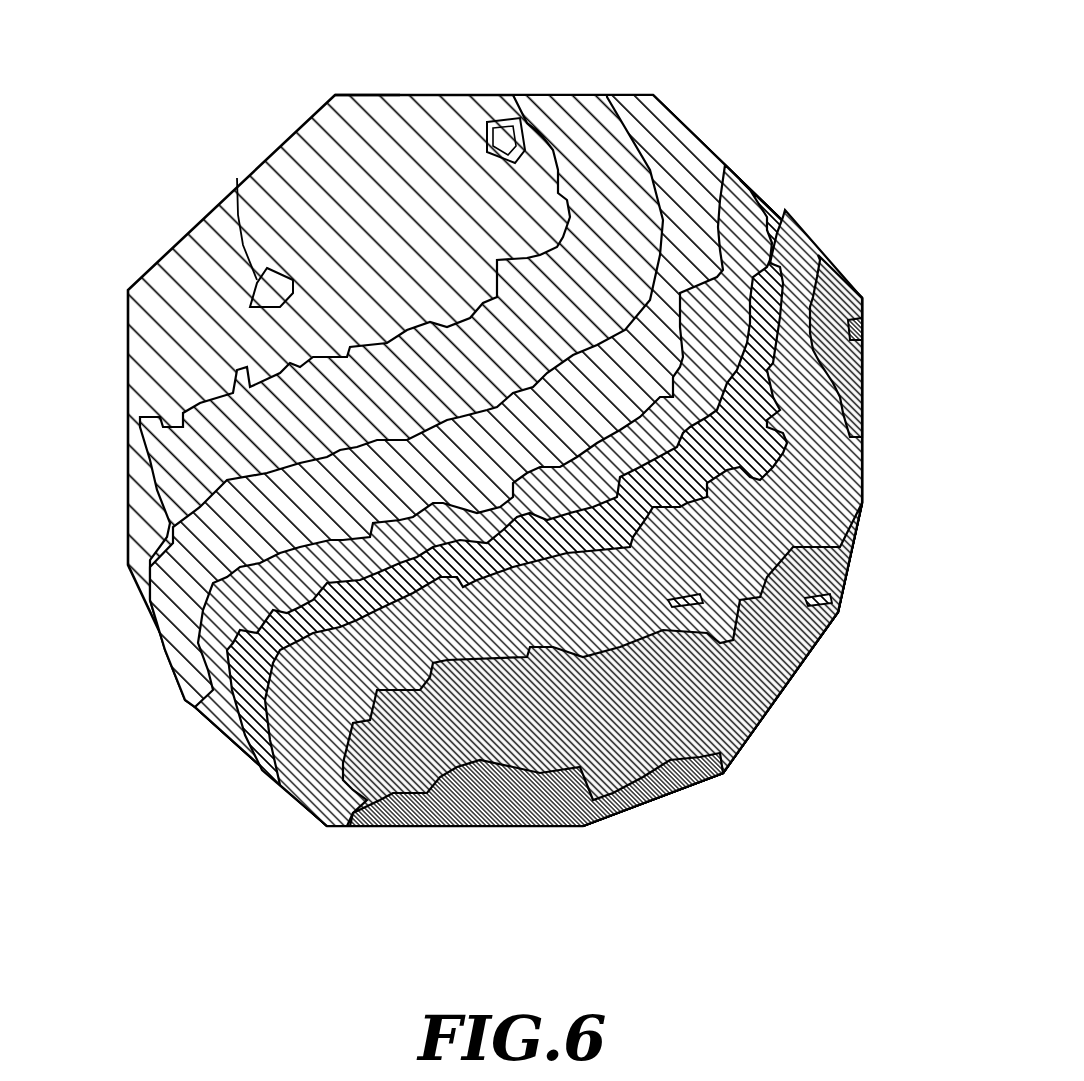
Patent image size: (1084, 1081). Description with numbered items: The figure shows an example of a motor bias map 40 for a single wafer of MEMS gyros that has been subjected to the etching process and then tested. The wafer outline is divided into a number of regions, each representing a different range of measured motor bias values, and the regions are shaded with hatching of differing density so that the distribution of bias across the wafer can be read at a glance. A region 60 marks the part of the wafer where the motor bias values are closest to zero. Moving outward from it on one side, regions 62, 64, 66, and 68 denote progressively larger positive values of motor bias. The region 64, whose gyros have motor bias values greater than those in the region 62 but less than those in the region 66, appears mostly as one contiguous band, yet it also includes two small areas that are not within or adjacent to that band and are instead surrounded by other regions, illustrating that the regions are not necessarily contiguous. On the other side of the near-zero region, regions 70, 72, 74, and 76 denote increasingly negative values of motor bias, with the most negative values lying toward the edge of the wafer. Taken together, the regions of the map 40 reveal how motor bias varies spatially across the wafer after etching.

The motor bias map 40 is at (128, 290).
The region 60 is at (728, 165).
The region 62 is at (672, 118).
The region 64 is at (237, 178).
The region 66 is at (481, 118).
The region 68 is at (336, 97).
The region 70 is at (585, 489).
The region 72 is at (782, 212).
The region 74 is at (862, 397).
The region 76 is at (862, 332).